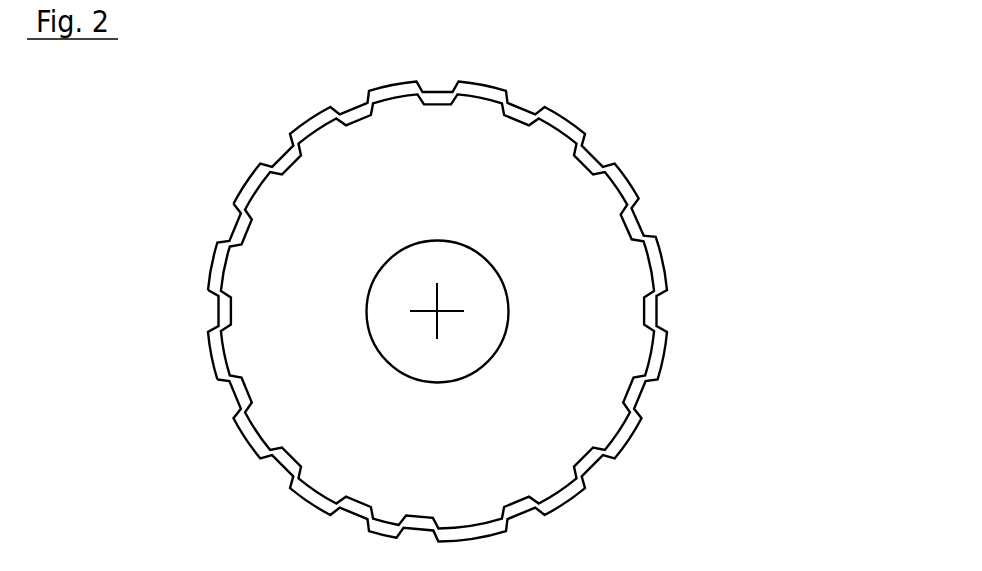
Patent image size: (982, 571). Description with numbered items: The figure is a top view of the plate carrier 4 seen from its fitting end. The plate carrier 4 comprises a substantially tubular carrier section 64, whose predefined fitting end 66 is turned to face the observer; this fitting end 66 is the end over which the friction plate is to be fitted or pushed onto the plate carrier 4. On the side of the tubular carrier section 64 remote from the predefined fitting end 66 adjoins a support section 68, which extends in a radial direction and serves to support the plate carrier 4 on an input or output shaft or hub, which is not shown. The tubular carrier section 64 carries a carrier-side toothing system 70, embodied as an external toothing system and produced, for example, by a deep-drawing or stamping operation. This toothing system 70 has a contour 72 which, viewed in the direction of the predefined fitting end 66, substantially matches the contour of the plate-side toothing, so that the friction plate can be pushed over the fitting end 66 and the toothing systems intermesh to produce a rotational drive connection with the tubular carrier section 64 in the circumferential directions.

The plate carrier 4 is at (758, 108).
The tubular carrier section 64 is at (668, 267).
The predefined fitting end 66 is at (620, 438).
The support section 68 is at (522, 192).
The carrier-side toothing system 70 is at (190, 342).
The contour 72 is at (236, 207).